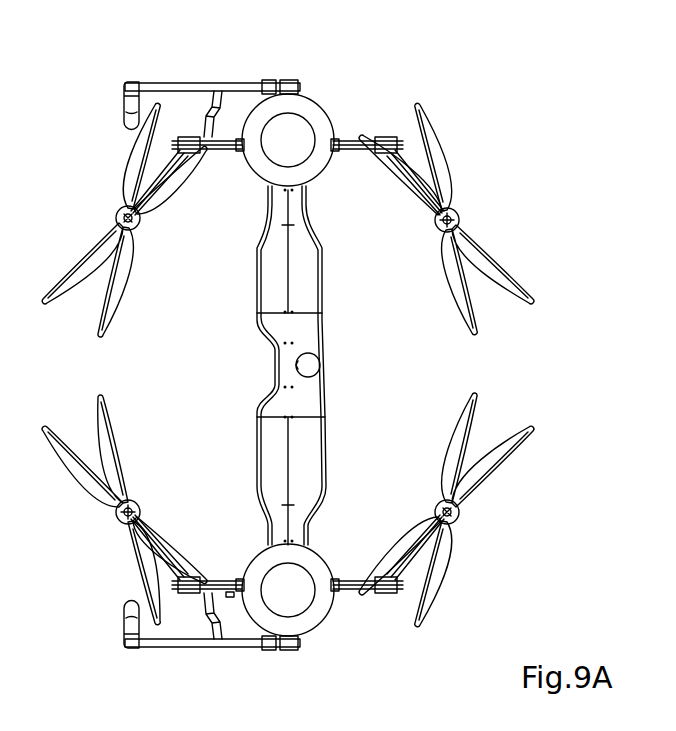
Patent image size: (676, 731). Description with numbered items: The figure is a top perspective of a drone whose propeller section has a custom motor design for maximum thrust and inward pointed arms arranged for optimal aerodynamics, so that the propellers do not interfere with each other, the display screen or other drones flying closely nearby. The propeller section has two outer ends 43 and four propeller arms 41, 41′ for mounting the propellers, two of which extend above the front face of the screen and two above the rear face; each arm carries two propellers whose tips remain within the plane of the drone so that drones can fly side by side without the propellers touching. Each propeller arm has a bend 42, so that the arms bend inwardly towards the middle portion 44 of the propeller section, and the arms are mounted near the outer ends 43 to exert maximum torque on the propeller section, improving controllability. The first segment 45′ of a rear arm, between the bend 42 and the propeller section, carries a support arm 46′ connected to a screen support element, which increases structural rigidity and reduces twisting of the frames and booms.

The propeller arm 41 is at (362, 154).
The propeller arm 41′ is at (223, 577).
The bend 42 is at (177, 140).
The outer end 43 is at (336, 91).
The middle portion 44 is at (352, 351).
The first segment 45′ is at (237, 593).
The support arm 46′ is at (212, 640).